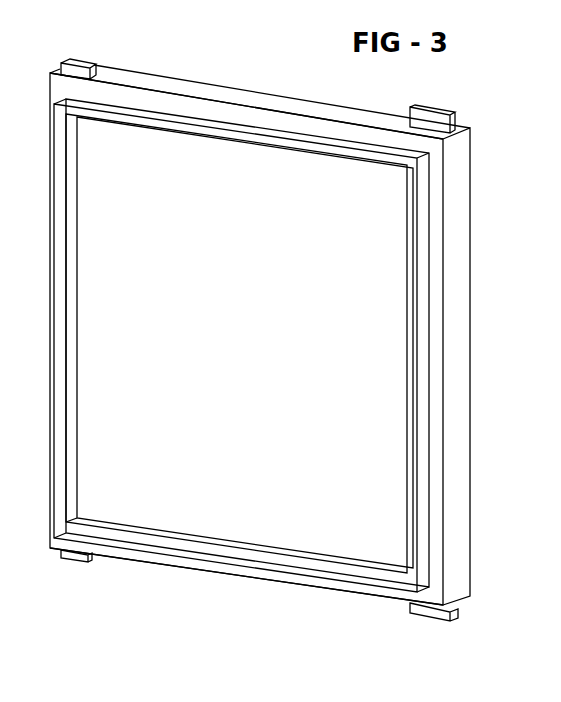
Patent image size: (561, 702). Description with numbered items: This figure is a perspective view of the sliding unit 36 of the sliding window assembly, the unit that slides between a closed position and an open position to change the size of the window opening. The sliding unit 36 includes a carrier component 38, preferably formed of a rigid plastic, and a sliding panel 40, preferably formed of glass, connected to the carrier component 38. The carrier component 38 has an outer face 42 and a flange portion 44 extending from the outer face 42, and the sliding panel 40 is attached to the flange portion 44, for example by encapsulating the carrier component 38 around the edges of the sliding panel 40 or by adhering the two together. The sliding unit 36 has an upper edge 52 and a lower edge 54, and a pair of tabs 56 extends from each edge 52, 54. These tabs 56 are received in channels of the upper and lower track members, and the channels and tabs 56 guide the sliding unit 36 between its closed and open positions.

The sliding unit 36 is at (300, 86).
The carrier component 38 is at (472, 242).
The sliding panel 40 is at (393, 393).
The outer face 42 is at (436, 186).
The flange portion 44 is at (423, 316).
The upper edge 52 is at (217, 91).
The lower edge 54 is at (250, 578).
The tab 56 is at (75, 63).